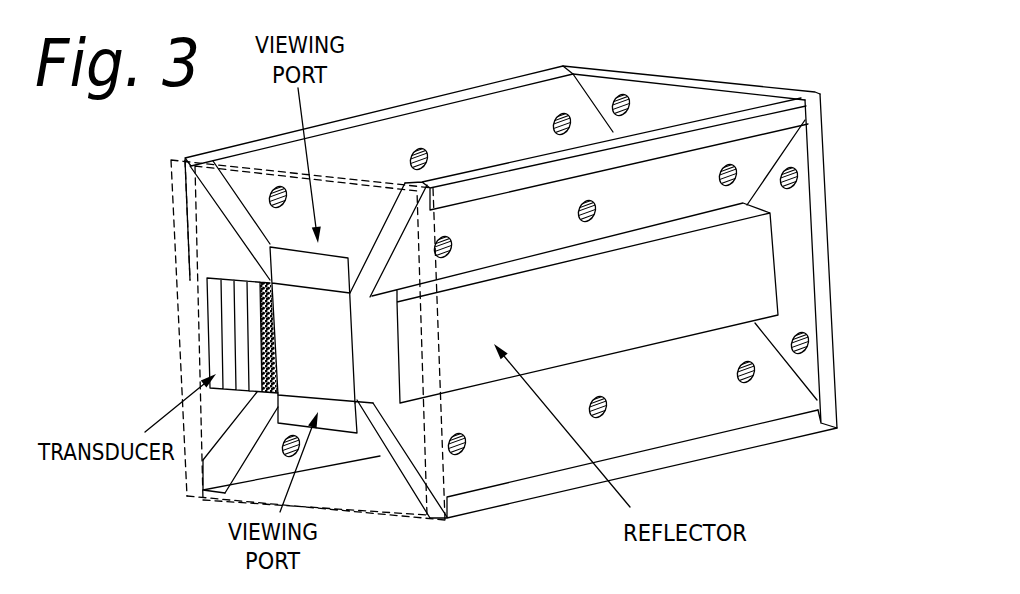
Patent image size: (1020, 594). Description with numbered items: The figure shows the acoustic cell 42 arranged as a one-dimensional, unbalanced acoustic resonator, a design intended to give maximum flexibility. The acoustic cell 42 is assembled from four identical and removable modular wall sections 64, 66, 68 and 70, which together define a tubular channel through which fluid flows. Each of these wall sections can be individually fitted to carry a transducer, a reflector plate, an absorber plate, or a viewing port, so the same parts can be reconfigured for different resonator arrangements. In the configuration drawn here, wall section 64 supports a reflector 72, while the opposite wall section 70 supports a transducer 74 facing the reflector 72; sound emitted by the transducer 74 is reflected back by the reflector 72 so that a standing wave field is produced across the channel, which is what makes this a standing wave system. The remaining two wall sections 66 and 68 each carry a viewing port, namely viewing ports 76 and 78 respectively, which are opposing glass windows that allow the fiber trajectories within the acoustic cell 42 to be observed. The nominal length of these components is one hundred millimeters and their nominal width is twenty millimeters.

The acoustic cell 42 is at (417, 102).
The wall section 64 is at (822, 232).
The wall section 66 is at (688, 80).
The wall section 68 is at (228, 498).
The wall section 70 is at (173, 290).
The reflector 72 is at (613, 357).
The transducer 74 is at (210, 360).
The viewing port 76 is at (340, 400).
The viewing port 78 is at (327, 297).